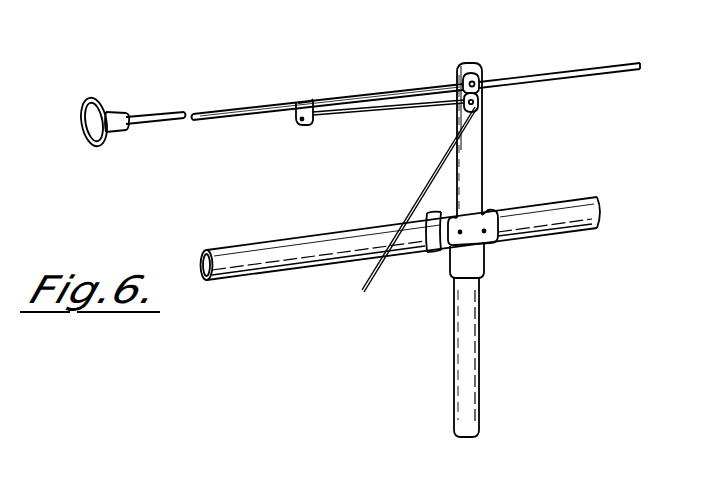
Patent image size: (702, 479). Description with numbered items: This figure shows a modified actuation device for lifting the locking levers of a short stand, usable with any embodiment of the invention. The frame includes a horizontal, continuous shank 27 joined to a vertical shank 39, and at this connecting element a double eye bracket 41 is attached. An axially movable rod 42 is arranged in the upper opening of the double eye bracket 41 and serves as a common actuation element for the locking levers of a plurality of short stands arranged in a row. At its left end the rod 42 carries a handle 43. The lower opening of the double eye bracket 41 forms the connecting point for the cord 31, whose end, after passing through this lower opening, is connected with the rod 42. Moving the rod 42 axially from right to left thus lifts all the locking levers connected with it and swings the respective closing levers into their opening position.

The horizontal continuous shank 27 is at (243, 252).
The cord 31 is at (433, 183).
The vertical shank 39 is at (471, 343).
The double eye bracket 41 is at (485, 84).
The rod 42 is at (241, 107).
The handle 43 is at (93, 151).